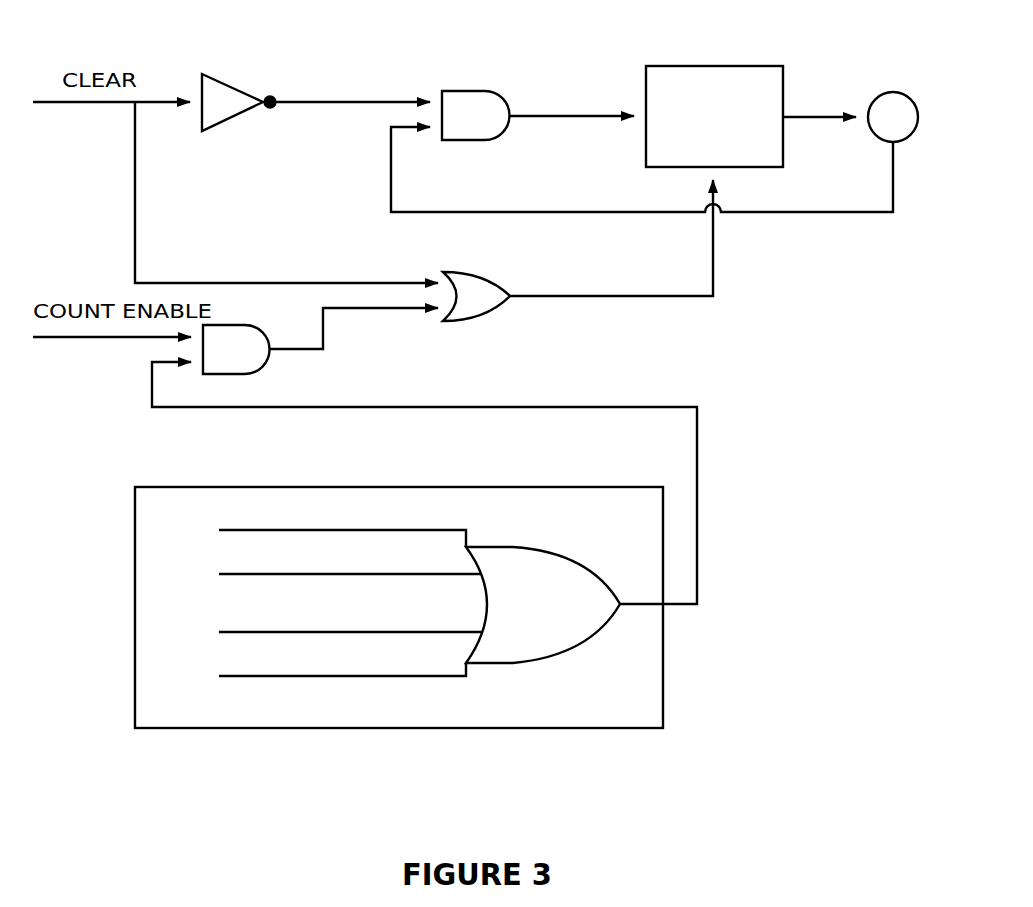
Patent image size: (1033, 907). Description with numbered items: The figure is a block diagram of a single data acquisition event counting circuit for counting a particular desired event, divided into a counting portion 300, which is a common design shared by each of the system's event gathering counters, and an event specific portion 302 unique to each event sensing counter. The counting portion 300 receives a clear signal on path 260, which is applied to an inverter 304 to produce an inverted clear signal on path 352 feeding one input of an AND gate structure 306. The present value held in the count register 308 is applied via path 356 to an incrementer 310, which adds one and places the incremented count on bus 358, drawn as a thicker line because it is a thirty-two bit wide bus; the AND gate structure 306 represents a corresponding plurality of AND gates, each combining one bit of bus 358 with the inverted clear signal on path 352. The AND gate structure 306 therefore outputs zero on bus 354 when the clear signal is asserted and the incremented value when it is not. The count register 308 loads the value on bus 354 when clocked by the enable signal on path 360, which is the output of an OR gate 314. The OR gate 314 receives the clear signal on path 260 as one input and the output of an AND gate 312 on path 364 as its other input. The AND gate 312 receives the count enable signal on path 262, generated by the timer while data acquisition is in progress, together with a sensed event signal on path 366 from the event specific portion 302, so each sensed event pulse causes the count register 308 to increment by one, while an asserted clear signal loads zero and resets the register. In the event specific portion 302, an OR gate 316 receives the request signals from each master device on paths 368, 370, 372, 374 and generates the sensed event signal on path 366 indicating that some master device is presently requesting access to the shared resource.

The clear signal path 260 is at (62, 108).
The count enable signal path 262 is at (70, 342).
The counting portion 300 is at (785, 380).
The event specific portion 302 is at (640, 735).
The inverter 304 is at (242, 120).
The AND gate structure 306 is at (500, 140).
The count register 308 is at (678, 64).
The incrementer 310 is at (873, 143).
The AND gate 312 is at (262, 372).
The OR gate 314 is at (480, 323).
The OR gate 316 is at (570, 560).
The inverted clear signal path 352 is at (299, 99).
The input bus 354 is at (575, 120).
The register output path 356 is at (800, 112).
The incremented count bus 358 is at (778, 217).
The enable signal path 360 is at (642, 300).
The AND gate output signal 364 is at (367, 312).
The sensed event signal path 366 is at (328, 411).
The master device request path 368 is at (234, 534).
The master device request path 370 is at (250, 578).
The master device request path 372 is at (258, 636).
The master device request path 374 is at (265, 680).